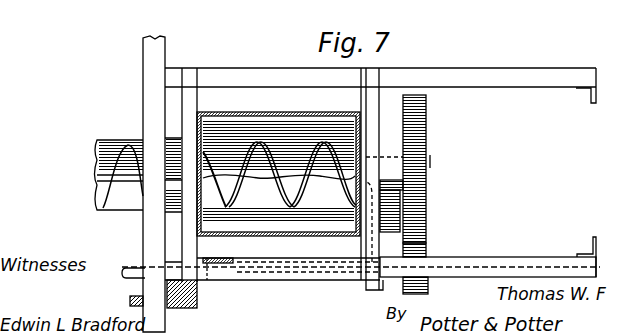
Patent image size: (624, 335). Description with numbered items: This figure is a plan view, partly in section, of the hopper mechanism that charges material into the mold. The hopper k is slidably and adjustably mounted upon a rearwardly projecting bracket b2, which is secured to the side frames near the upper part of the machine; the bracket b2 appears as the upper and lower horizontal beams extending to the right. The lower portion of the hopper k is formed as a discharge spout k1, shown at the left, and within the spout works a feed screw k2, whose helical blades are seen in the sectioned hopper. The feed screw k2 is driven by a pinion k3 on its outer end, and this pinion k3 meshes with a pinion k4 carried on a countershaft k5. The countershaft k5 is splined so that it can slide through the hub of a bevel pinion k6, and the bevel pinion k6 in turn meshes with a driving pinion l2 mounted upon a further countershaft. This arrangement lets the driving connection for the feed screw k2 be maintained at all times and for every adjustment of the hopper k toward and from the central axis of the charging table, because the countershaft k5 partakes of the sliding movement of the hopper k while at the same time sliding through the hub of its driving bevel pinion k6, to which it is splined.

The hopper k is at (287, 112).
The discharge spout k1 is at (104, 139).
The feed screw k2 is at (297, 186).
The pinion k3 is at (427, 133).
The pinion k4 is at (427, 246).
The countershaft k5 is at (130, 266).
The bevel pinion k6 is at (200, 298).
The bracket b2 is at (473, 68).
The driving pinion l2 is at (132, 300).